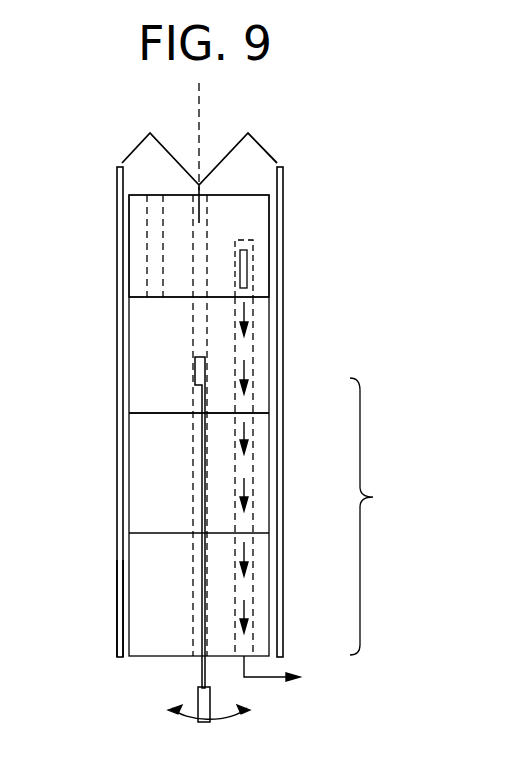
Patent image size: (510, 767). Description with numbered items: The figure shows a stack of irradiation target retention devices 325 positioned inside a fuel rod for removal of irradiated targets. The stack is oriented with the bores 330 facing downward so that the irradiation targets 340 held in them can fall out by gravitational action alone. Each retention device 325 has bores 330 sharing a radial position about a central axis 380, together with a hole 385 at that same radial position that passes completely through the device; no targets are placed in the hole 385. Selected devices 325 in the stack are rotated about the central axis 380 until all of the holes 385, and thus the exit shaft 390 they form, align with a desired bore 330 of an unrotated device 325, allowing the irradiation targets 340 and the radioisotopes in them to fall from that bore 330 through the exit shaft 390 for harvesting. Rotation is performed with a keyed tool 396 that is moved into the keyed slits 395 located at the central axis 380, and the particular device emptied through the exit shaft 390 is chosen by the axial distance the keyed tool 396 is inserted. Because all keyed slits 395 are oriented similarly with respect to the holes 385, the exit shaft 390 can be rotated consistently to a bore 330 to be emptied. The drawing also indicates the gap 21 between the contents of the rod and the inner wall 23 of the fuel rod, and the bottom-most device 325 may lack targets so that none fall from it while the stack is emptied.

The central axis 380 is at (199, 122).
The irradiation target retention device 325 is at (257, 215).
The bore 330 is at (250, 257).
The irradiation target 340 is at (247, 272).
The hole 385 is at (152, 248).
The keyed slit 395 is at (195, 478).
The keyed tool 396 is at (200, 672).
The exit shaft 390 is at (384, 516).
The gap 21 is at (122, 608).
The inner wall 23 is at (128, 633).